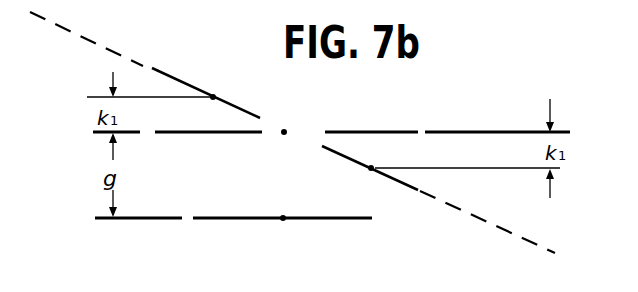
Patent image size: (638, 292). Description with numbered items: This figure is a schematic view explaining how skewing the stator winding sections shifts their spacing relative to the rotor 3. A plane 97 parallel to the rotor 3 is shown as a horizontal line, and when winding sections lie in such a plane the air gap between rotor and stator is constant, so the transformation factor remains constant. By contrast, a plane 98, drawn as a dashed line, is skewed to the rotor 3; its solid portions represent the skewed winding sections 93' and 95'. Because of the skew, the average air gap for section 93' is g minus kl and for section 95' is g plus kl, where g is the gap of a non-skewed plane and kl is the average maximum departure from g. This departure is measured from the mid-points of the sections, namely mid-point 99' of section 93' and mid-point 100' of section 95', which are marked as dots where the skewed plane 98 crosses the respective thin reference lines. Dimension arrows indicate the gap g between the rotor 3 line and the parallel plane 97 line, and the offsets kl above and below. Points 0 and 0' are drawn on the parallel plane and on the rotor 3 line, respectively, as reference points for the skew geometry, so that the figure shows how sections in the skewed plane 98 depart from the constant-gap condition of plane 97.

The skewed plane 98 is at (82, 36).
The skewed winding section 95' is at (206, 85).
The mid-point of winding section 95' 100' is at (244, 86).
The center point of upper plate gap 0 is at (298, 114).
The plane parallel to the rotor 97 is at (455, 132).
The mid-point of winding section 93' 99' is at (347, 182).
The skewed winding section 93' is at (370, 200).
The rotor 3 is at (208, 220).
The center point of lower plate 0' is at (300, 238).